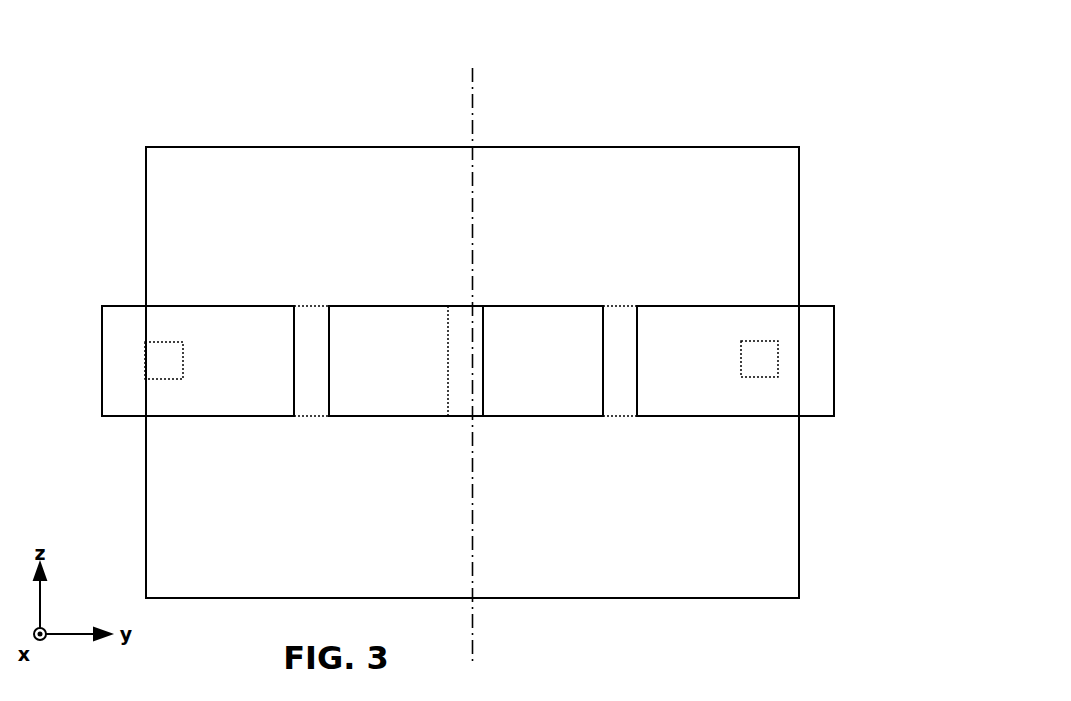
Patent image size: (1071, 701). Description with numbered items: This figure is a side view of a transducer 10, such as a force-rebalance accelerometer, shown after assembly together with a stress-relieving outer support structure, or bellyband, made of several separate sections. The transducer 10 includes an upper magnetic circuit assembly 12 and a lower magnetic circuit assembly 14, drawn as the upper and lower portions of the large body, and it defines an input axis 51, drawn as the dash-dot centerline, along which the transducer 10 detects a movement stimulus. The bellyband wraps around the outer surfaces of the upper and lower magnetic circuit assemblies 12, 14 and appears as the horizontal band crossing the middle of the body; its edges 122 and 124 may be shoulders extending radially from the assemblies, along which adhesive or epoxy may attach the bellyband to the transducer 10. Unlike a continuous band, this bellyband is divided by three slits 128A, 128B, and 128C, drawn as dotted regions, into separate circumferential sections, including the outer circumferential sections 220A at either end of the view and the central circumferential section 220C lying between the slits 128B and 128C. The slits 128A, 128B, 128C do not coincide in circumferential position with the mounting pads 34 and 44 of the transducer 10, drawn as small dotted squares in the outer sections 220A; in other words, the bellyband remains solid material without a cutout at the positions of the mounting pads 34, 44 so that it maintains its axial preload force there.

The transducer 10 is at (744, 72).
The upper magnetic circuit assembly 12 is at (782, 208).
The lower magnetic circuit assembly 14 is at (773, 534).
The mounting pad 34 is at (756, 350).
The mounting pad 44 is at (168, 342).
The input axis 51 is at (472, 125).
The edge of bellyband 122 is at (350, 305).
The edge of bellyband 124 is at (343, 418).
The slit 128A is at (307, 333).
The slit 128B is at (462, 408).
The slit 128C is at (615, 397).
The circumferential section of bellyband 220A is at (123, 383).
The circumferential section of bellyband 220C is at (532, 325).